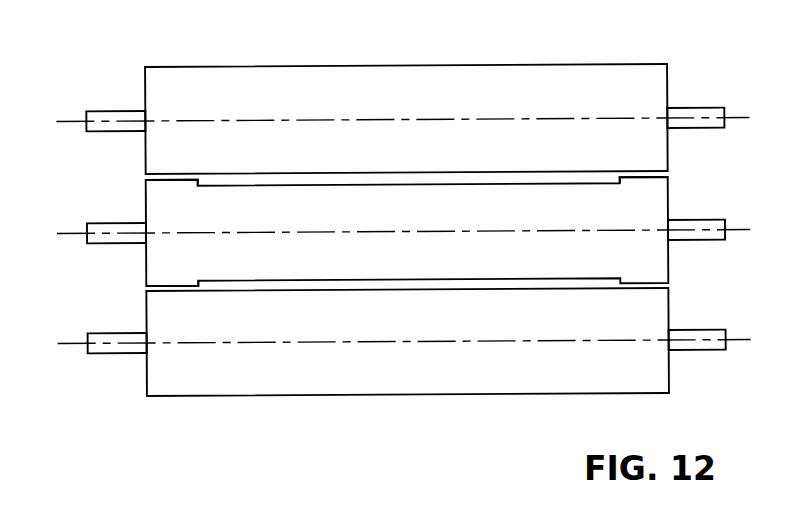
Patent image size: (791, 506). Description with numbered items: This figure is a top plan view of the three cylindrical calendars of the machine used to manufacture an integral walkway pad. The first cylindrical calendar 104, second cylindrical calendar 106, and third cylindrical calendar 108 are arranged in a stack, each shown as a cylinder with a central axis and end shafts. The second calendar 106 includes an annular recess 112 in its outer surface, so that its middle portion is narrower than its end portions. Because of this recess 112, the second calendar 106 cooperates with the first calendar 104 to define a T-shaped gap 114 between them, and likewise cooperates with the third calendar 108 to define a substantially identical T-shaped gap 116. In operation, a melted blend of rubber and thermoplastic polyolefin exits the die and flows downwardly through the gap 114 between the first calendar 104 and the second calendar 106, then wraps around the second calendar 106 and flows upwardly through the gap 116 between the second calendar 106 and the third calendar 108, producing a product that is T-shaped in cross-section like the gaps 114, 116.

The first cylindrical calendar 104 is at (629, 82).
The second cylindrical calendar 106 is at (650, 212).
The third cylindrical calendar 108 is at (653, 320).
The annular recess 112 is at (605, 176).
The T-shaped gap 114 is at (212, 182).
The T-shaped gap 116 is at (215, 284).